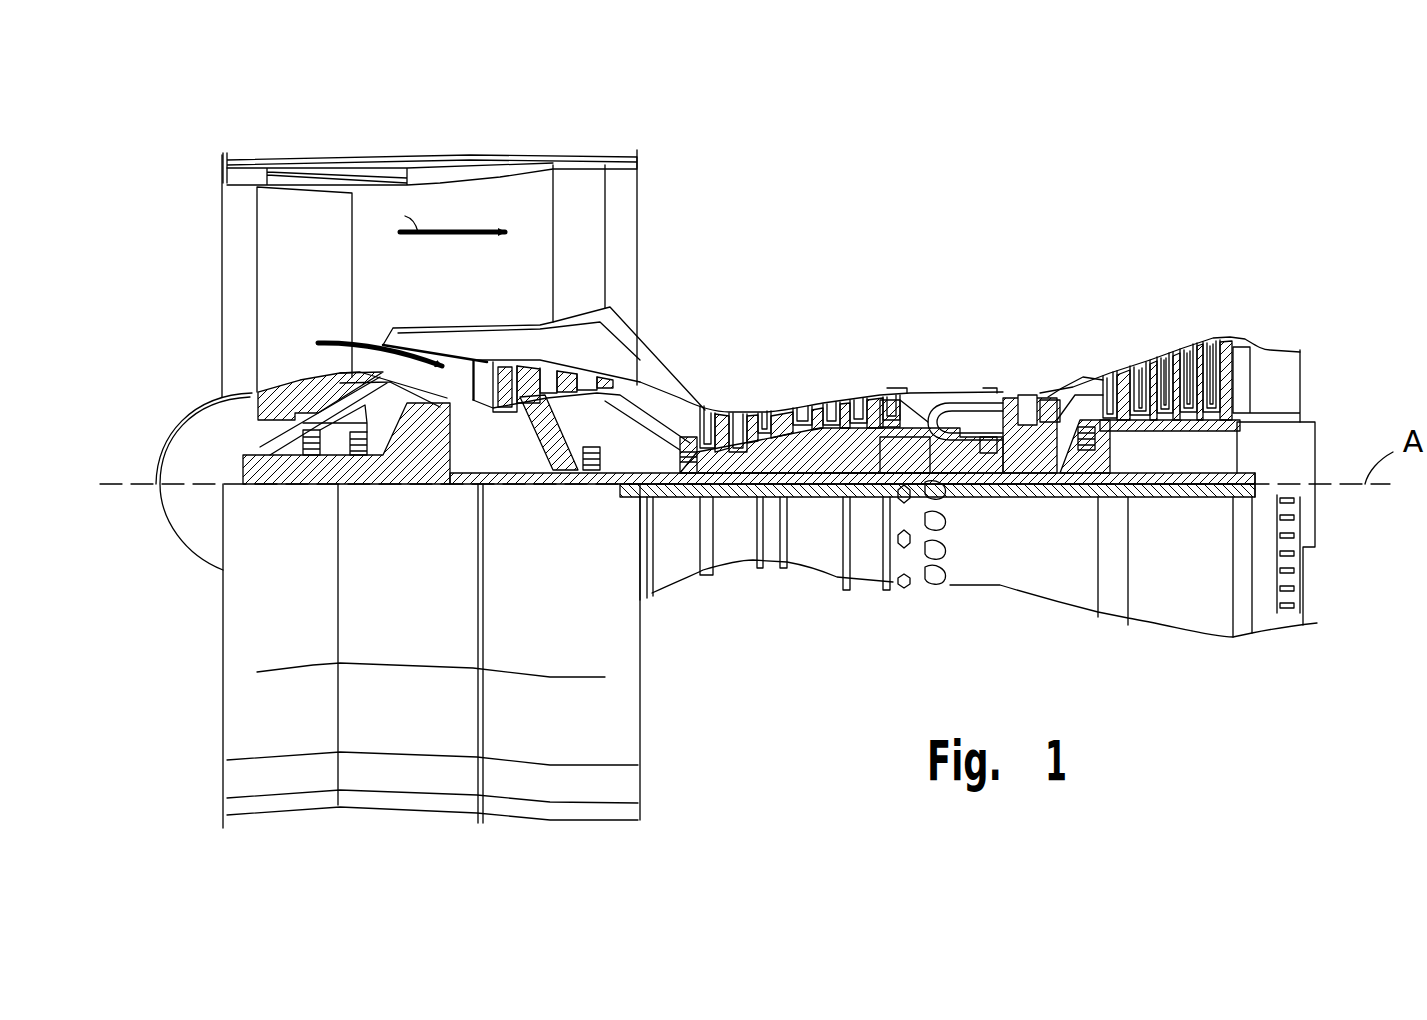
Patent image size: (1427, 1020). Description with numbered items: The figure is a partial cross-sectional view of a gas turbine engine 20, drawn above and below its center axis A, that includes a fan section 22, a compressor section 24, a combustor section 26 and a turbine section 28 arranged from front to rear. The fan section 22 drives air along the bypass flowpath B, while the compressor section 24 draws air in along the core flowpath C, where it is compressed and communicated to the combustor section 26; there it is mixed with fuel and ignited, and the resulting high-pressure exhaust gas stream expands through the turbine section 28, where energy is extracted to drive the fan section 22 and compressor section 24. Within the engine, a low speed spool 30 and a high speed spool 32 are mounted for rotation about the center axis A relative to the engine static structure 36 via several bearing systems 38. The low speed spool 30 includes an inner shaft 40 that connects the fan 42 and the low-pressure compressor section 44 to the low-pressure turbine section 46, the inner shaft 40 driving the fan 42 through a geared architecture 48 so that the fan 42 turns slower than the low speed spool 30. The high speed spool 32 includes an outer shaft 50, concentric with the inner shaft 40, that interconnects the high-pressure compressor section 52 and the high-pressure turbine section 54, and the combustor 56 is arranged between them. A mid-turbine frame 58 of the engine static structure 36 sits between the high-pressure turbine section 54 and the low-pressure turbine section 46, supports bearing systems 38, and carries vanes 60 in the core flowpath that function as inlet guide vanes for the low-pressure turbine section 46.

The gas turbine engine 20 is at (1135, 156).
The fan section 22 is at (455, 127).
The compressor section 24 is at (925, 271).
The combustor section 26 is at (1000, 271).
The turbine section 28 is at (1005, 271).
The low speed spool 30 is at (815, 492).
The high speed spool 32 is at (847, 446).
The engine static structure 36 is at (868, 598).
The bearing systems 38 is at (313, 456).
The inner shaft 40 is at (662, 497).
The fan 42 is at (287, 267).
The low-pressure compressor section 44 is at (567, 377).
The low-pressure turbine section 46 is at (1173, 362).
The geared architecture 48 is at (437, 462).
The outer shaft 50 is at (955, 462).
The high-pressure compressor section 52 is at (806, 462).
The high-pressure turbine section 54 is at (1028, 393).
The combustor 56 is at (952, 414).
The mid-turbine frame 58 is at (1072, 383).
The vanes 60 is at (1067, 403).